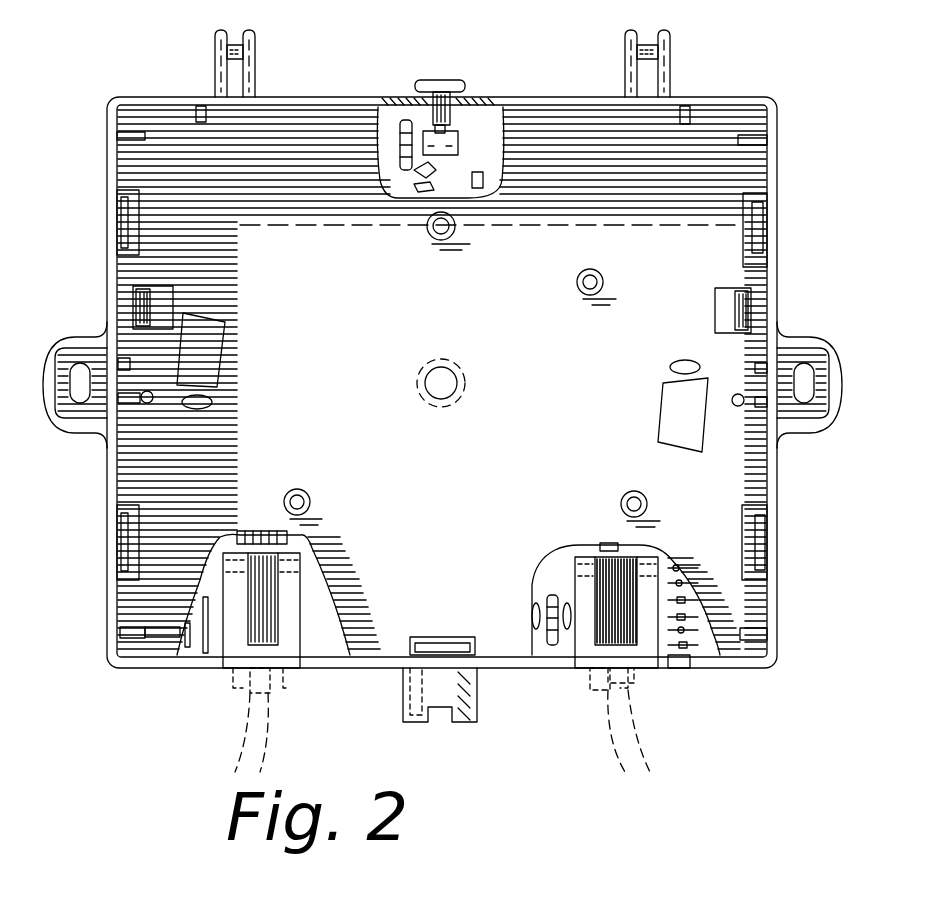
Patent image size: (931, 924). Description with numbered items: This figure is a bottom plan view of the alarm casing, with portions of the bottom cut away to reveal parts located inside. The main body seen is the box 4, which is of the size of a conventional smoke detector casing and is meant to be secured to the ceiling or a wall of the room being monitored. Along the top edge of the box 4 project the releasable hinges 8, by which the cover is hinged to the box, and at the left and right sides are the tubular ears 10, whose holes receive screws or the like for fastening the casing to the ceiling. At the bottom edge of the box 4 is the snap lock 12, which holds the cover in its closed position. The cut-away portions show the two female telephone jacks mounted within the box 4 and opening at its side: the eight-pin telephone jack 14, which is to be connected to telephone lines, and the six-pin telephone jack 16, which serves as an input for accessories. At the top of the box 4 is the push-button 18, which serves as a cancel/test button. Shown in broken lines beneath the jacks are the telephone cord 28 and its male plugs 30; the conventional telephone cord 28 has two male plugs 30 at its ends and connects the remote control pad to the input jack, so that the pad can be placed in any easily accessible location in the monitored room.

The box 4 is at (778, 232).
The releasable hinges 8 is at (257, 70).
The tubular ears 10 is at (70, 420).
The snap lock 12 is at (470, 714).
The eight-pin telephone jack 14 is at (634, 645).
The six-pin telephone jack 16 is at (245, 630).
The push-button 18 is at (441, 80).
The telephone cord 28 is at (255, 740).
The male plugs 30 is at (284, 691).